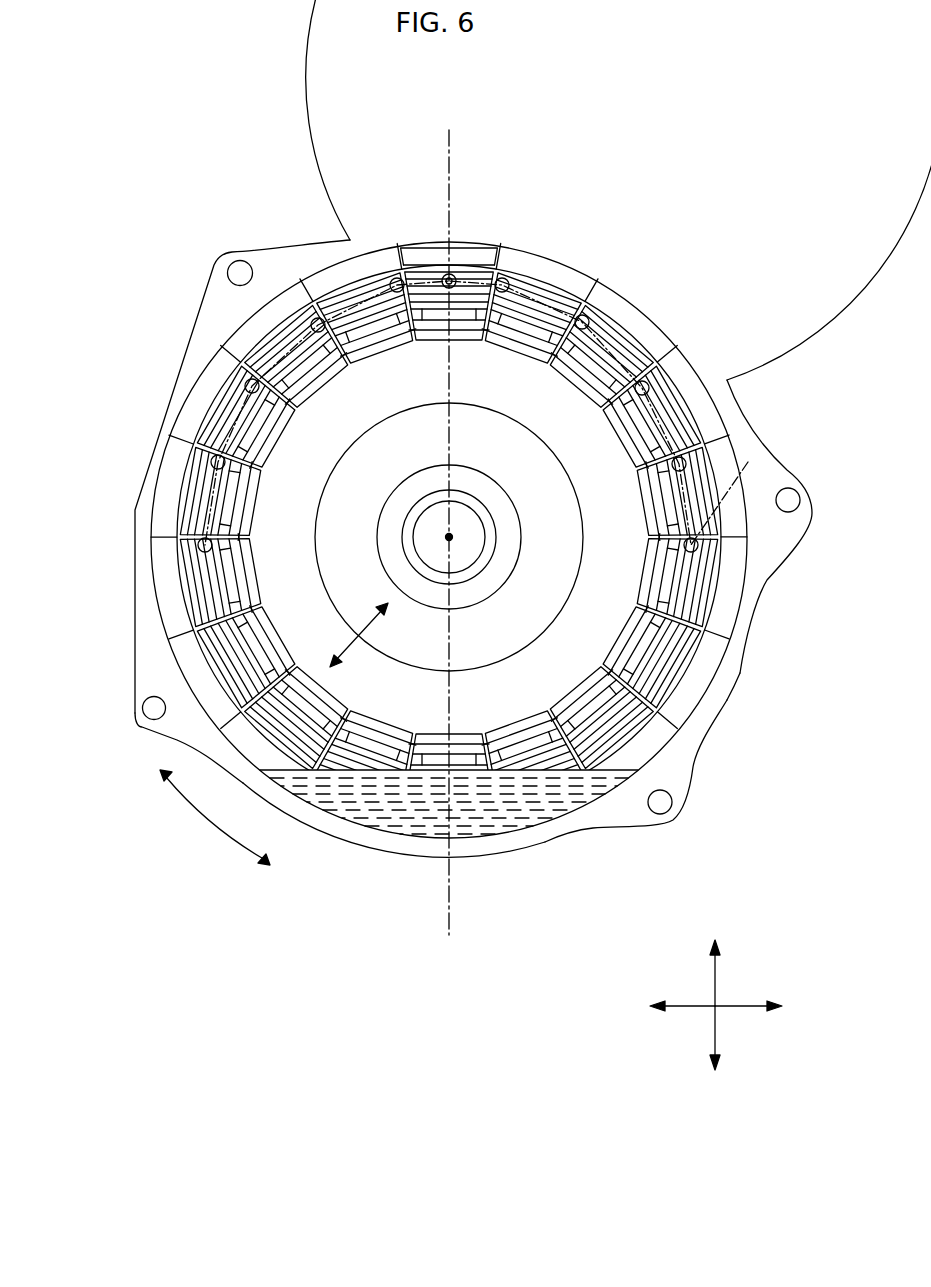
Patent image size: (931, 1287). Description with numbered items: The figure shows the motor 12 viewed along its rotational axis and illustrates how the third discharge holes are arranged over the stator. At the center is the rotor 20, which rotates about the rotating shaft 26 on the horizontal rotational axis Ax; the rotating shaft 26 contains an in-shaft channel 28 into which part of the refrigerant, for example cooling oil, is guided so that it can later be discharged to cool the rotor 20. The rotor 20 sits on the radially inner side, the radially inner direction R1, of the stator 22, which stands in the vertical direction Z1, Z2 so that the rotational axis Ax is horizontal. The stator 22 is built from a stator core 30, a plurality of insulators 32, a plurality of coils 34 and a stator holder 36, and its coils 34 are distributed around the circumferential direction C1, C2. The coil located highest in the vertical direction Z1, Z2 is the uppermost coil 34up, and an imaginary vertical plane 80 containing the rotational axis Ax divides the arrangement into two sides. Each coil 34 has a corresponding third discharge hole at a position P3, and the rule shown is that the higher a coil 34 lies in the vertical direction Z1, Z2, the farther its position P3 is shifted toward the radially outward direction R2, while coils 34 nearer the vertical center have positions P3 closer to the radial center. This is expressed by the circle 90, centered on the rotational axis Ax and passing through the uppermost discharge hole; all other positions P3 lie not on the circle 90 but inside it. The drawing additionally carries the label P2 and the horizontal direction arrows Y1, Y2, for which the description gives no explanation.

The motor 12 is at (459, 86).
The rotor 20 is at (692, 695).
The stator 22 is at (152, 662).
The rotating shaft 26 is at (520, 569).
The in-shaft channel 28 is at (425, 542).
The stator core 30 is at (142, 506).
The insulators 32 is at (655, 742).
The coils 34 is at (688, 398).
The uppermost coil 34up is at (434, 290).
The stator holder 36 is at (738, 413).
The imaginary vertical plane 80 is at (455, 900).
The circle 90 is at (748, 462).
The position P2 is at (452, 292).
The positions of third discharge holes P3 is at (321, 333).
The rotational axis Ax is at (452, 535).
The radially inner direction R1 is at (379, 630).
The radially outward direction R2 is at (350, 678).
The circumferential direction C1 is at (190, 796).
The circumferential direction C2 is at (286, 874).
The vertically upward direction Z1 is at (713, 957).
The vertically downward direction Z2 is at (713, 1056).
The horizontal direction 1 Y1 is at (766, 1006).
The horizontal direction 2 Y2 is at (663, 1006).